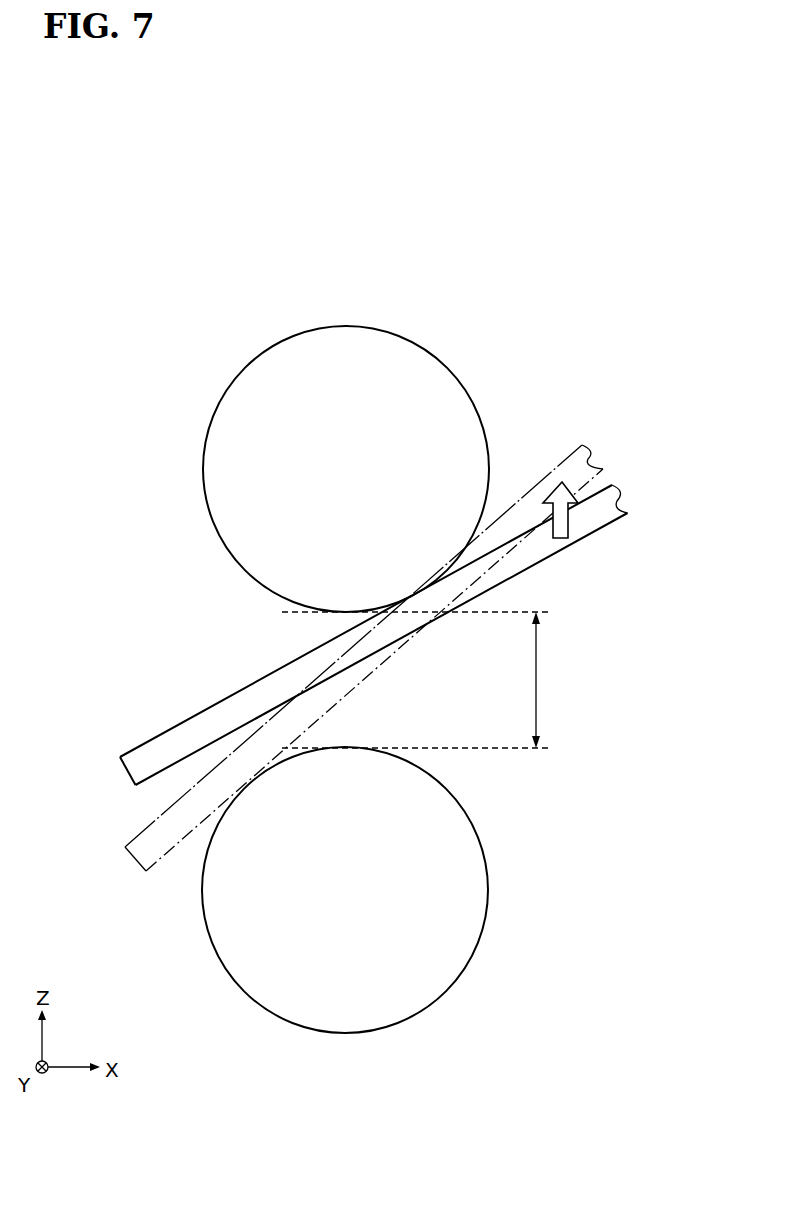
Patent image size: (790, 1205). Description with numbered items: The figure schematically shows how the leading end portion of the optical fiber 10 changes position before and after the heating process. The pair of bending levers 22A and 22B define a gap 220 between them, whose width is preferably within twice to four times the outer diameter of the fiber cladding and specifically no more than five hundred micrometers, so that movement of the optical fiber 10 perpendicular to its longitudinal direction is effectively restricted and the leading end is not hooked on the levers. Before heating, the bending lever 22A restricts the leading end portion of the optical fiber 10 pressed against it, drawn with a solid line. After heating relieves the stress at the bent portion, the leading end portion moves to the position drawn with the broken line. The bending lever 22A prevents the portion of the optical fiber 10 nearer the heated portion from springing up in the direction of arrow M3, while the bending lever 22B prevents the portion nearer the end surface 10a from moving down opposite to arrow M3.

The gap 220 is at (124, 645).
The bending lever 22A is at (258, 373).
The bending lever 22B is at (485, 883).
The optical fiber 10 is at (140, 743).
The end surface 10a is at (122, 777).
The arrow M3 is at (570, 545).